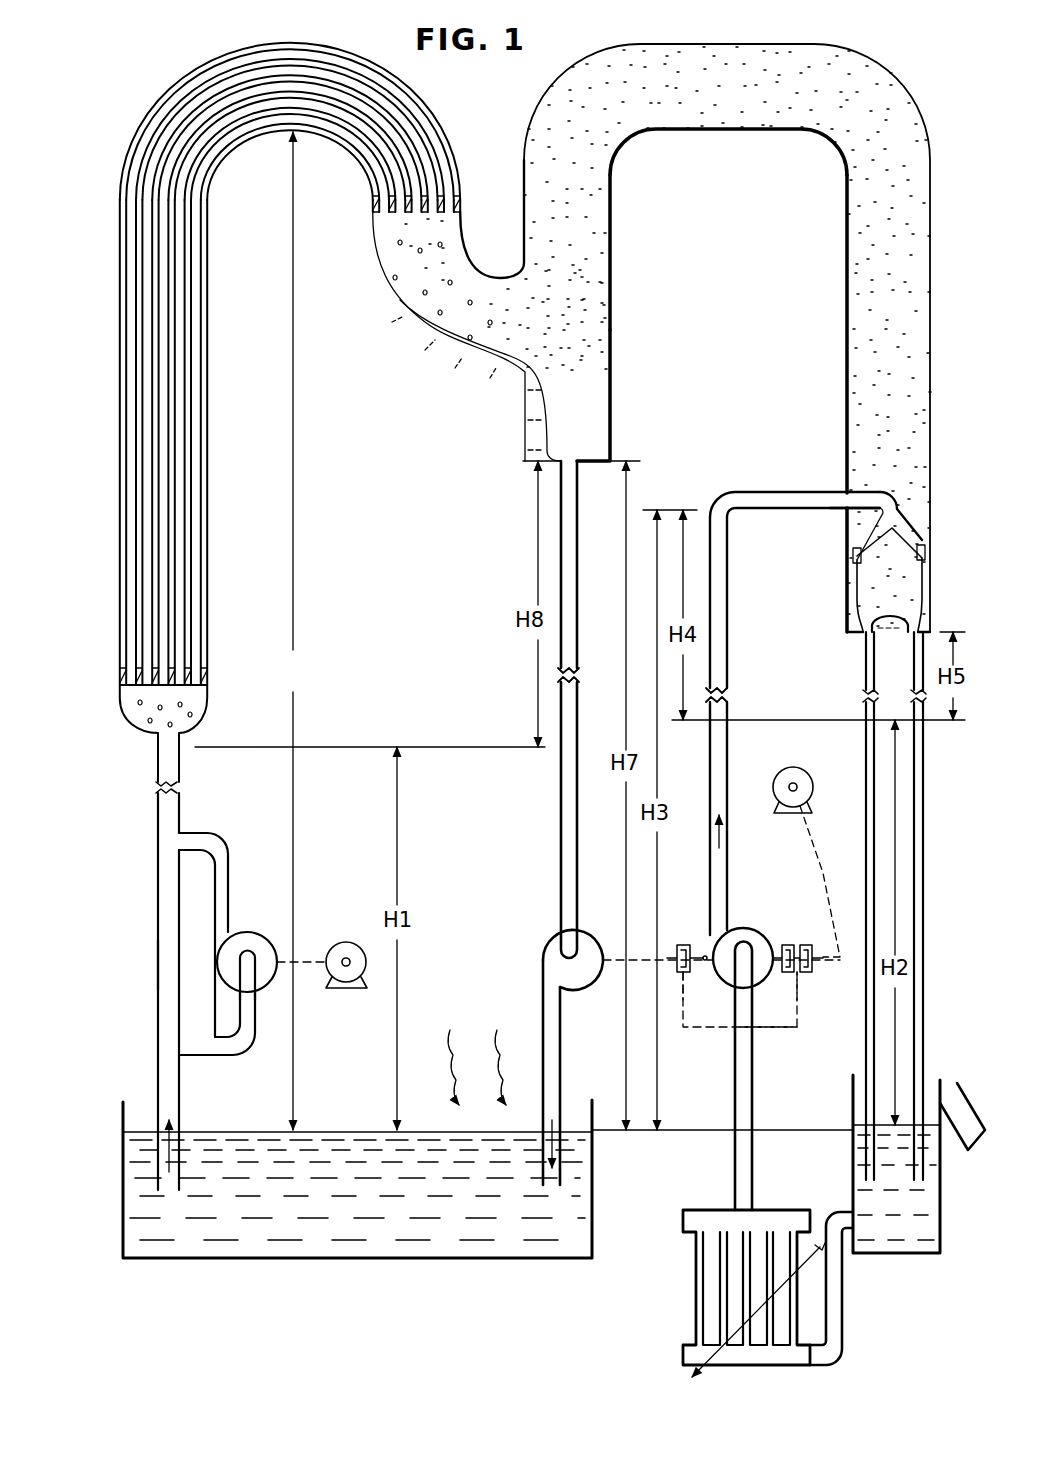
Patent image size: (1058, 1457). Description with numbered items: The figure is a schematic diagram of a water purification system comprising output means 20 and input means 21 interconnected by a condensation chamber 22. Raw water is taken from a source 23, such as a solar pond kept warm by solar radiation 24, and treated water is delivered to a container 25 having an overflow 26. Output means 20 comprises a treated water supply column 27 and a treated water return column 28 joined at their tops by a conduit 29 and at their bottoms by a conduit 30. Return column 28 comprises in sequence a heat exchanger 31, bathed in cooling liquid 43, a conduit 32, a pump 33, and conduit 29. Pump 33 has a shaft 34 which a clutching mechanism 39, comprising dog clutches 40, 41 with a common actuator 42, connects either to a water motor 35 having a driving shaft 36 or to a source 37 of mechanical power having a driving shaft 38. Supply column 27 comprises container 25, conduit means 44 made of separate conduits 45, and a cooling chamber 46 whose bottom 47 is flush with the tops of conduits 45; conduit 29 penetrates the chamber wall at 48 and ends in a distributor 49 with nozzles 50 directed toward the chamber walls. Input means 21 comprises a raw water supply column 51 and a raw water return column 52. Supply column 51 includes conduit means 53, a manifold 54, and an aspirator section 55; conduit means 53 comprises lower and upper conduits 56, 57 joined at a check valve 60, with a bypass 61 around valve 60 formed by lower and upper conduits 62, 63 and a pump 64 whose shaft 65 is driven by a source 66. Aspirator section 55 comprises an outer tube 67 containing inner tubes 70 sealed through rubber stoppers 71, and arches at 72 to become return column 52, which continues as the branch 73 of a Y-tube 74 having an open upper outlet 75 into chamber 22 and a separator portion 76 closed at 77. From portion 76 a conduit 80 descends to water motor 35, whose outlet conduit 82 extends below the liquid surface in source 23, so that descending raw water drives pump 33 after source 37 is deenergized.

The output means 20 is at (668, 338).
The input means 21 is at (370, 631).
The condensation chamber 22 is at (727, 130).
The source 23 is at (290, 1258).
The solar radiation 24 is at (452, 1040).
The container 25 is at (913, 1255).
The overflow 26 is at (955, 1118).
The treated water supply column 27 is at (830, 649).
The treated water return column 28 is at (748, 692).
The conduit 29 is at (772, 490).
The conduit 30 is at (843, 1345).
The heat exchanger 31 is at (696, 1294).
The conduit 32 is at (754, 1166).
The pump 33 is at (744, 929).
The shaft 34 is at (701, 943).
The water motor 35 is at (553, 943).
The driving shaft 36 is at (615, 958).
The source of mechanical power 37 is at (790, 767).
The driving shaft 38 is at (821, 881).
The clutching mechanism 39 is at (726, 1036).
The dog clutch 40 is at (690, 975).
The dog clutch 41 is at (815, 972).
The common actuator 42 is at (765, 1030).
The cooling liquid 43 is at (818, 1260).
The conduit means 44 is at (890, 941).
The conduits 45 is at (912, 773).
The cooling chamber 46 is at (932, 618).
The bottom 47 is at (894, 659).
The wall penetration 48 is at (845, 513).
The distributor 49 is at (913, 521).
The nozzles 50 is at (924, 549).
The raw water supply column 51 is at (300, 488).
The raw water return column 52 is at (430, 519).
The conduit means 53 is at (224, 989).
The manifold 54 is at (135, 737).
The aspirator section 55 is at (260, 350).
The lower conduit 56 is at (180, 1102).
The upper conduit 57 is at (178, 813).
The check valve 60 is at (163, 955).
The bypass 61 is at (250, 921).
The lower conduit 62 is at (244, 1044).
The upper conduit 63 is at (224, 855).
The pump 64 is at (230, 976).
The shaft 65 is at (301, 958).
The source of mechanical energy 66 is at (350, 942).
The outer tube 67 is at (120, 425).
The inner tubes 70 is at (165, 308).
The rubber stoppers 71 is at (372, 205).
The arch 72 is at (243, 47).
The branch 73 is at (410, 287).
The Y-tube 74 is at (498, 262).
The upper outlet 75 is at (610, 213).
The separator portion 76 is at (613, 432).
The closure 77 is at (606, 467).
The conduit 80 is at (579, 642).
The conduit 82 is at (560, 1072).